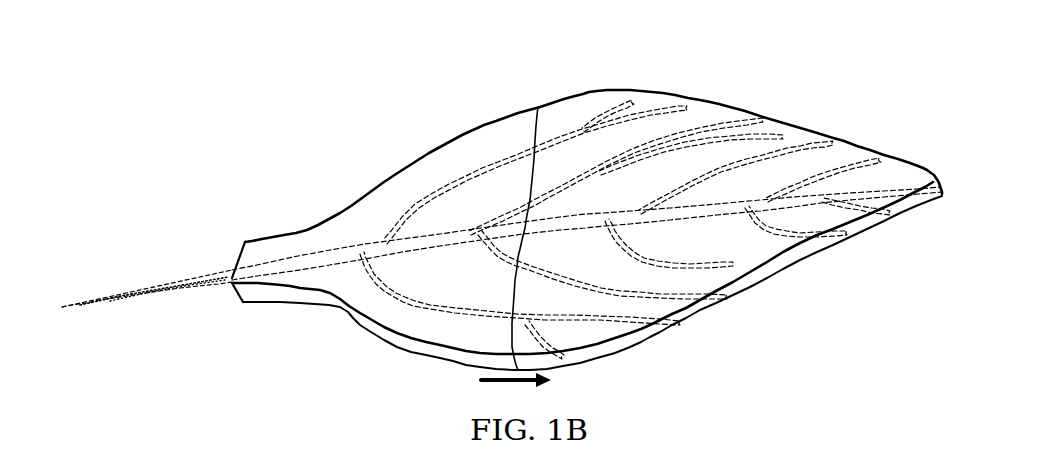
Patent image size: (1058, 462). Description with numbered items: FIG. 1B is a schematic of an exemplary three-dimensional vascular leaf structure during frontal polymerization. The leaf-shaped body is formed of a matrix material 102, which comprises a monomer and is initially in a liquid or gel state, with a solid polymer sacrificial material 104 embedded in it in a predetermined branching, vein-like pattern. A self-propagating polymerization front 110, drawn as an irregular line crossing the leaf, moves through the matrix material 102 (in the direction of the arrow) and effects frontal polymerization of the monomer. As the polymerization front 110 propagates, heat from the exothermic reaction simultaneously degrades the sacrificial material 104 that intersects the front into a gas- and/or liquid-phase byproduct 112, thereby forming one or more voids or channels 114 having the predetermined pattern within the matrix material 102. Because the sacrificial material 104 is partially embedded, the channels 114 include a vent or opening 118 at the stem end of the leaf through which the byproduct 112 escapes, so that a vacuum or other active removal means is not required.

The matrix material 102 is at (318, 230).
The sacrificial material 104 is at (653, 110).
The polymerization front 110 is at (537, 119).
The byproduct 112 is at (150, 282).
The voids or channels 114 is at (467, 177).
The vent or opening 118 is at (232, 280).